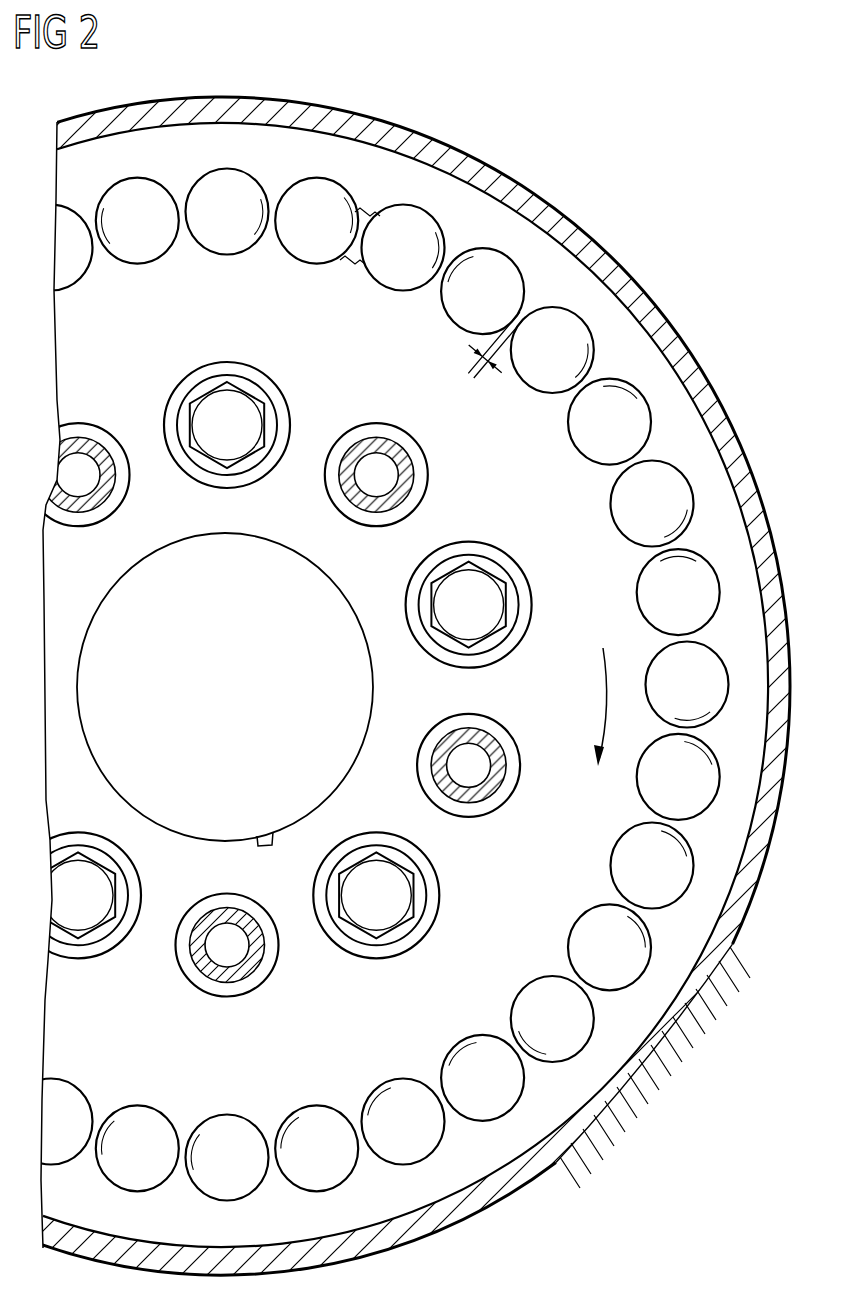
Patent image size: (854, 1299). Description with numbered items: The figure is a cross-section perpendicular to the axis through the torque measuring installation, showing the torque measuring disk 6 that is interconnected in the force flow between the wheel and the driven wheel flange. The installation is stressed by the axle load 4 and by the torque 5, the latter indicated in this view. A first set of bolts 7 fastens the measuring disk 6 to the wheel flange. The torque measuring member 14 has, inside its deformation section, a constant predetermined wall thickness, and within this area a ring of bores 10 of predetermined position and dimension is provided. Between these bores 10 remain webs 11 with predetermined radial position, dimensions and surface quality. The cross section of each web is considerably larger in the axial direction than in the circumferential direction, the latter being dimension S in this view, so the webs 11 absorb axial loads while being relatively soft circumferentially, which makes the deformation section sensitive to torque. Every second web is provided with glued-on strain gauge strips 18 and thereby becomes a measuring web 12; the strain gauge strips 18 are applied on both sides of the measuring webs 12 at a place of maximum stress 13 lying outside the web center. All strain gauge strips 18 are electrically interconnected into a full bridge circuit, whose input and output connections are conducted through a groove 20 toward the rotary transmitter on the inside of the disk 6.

The axle load 4 is at (226, 722).
The torque 5 is at (604, 697).
The torque measuring disk 6 is at (623, 261).
The first set of bolts 7 is at (238, 413).
The ring of bores 10 is at (552, 308).
The webs 11 is at (272, 217).
The measuring webs 12 is at (581, 387).
The place of maximum stress 13 is at (364, 258).
The torque measuring member 14 is at (519, 901).
The strain gauge strip 18 is at (631, 386).
The groove 20 is at (266, 832).
The circumferential web dimension S is at (494, 356).